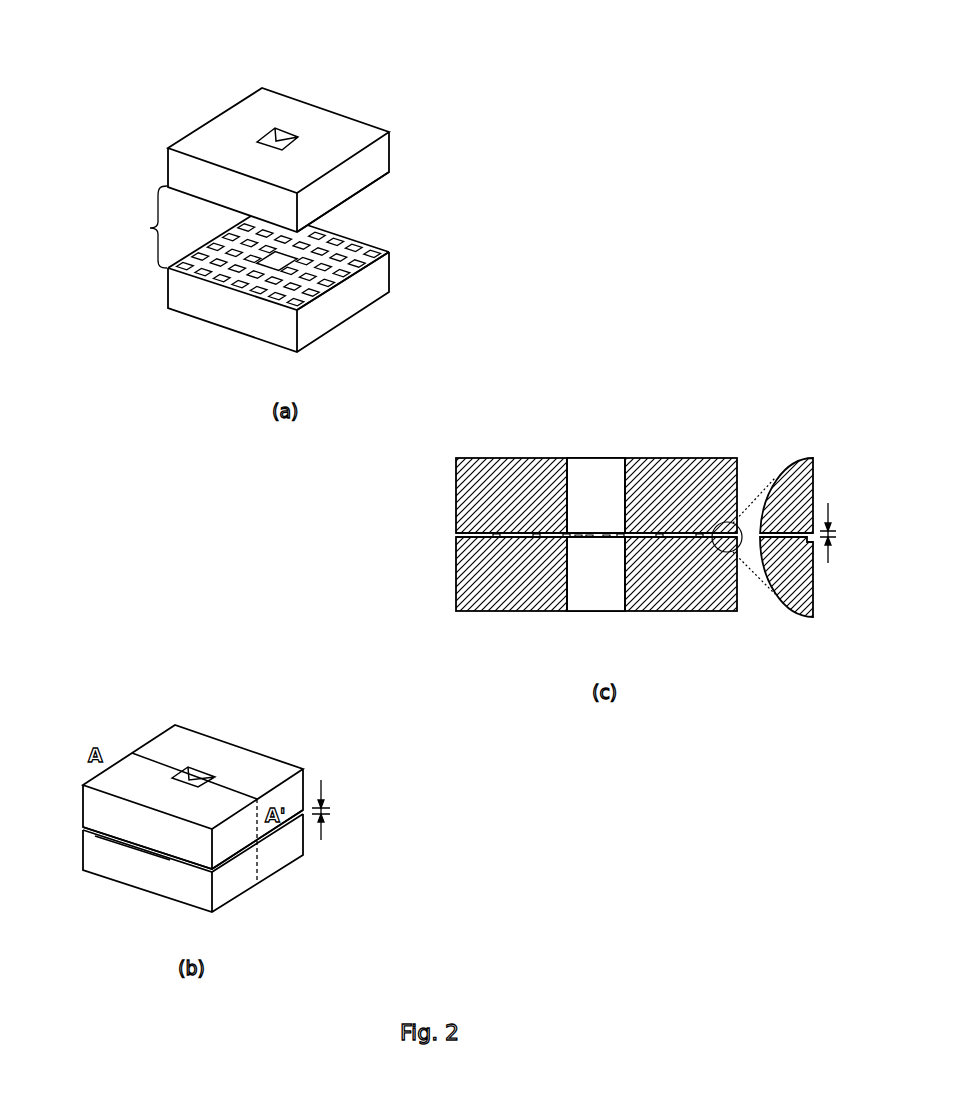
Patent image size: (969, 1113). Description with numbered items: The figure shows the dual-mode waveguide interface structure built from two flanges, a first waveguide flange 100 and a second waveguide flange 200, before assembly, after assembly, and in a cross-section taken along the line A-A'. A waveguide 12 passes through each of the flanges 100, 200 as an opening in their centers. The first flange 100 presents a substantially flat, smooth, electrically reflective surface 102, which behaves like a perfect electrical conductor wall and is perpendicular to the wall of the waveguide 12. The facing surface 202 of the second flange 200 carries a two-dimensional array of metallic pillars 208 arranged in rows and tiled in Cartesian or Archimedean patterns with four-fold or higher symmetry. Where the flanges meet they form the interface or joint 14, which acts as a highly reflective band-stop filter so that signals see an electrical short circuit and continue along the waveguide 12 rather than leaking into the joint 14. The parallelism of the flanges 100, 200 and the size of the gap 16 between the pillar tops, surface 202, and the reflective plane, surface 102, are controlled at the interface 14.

The first waveguide flange 100 is at (168, 148).
The second waveguide flange 200 is at (168, 308).
The waveguide 12 is at (298, 138).
The surface 102 is at (377, 185).
The surface 202 is at (367, 243).
The pillars 208 is at (370, 268).
The interface or joint 14 is at (443, 532).
The gap 16 is at (590, 671).